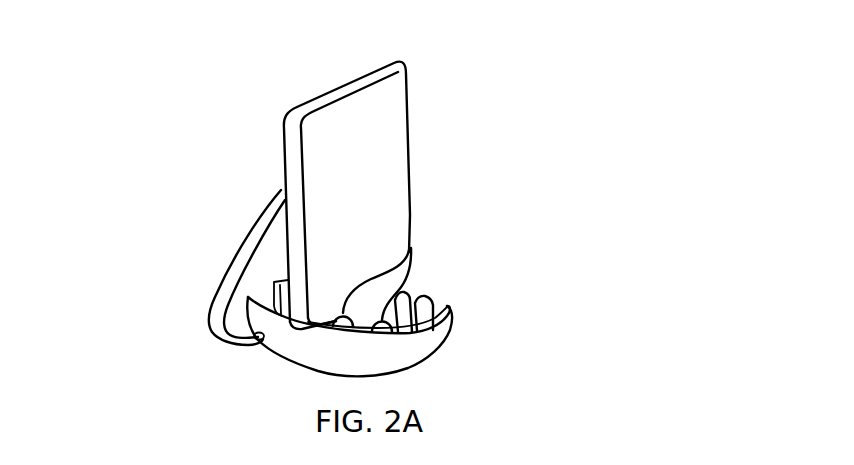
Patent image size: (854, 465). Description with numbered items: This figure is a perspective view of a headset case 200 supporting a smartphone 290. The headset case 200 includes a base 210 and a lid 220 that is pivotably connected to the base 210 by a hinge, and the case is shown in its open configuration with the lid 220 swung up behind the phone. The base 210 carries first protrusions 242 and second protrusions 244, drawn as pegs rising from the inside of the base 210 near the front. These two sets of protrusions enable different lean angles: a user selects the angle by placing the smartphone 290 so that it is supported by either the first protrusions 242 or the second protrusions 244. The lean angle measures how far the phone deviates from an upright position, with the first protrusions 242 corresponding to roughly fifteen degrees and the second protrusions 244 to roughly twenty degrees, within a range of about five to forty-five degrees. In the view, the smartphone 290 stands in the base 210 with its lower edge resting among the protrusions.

The headset case 200 is at (566, 96).
The base 210 is at (427, 345).
The lid 220 is at (246, 245).
The first protrusions 242 is at (343, 313).
The second protrusions 244 is at (436, 296).
The smartphone 290 is at (289, 119).